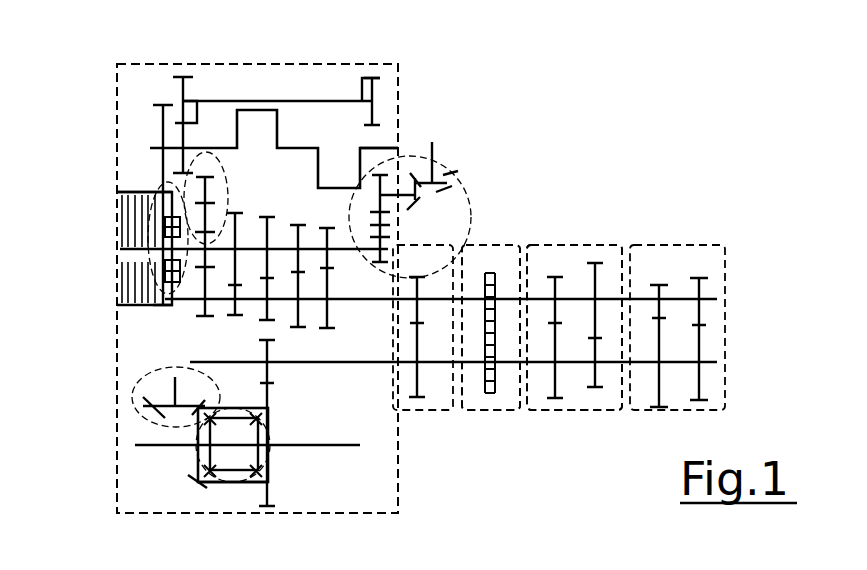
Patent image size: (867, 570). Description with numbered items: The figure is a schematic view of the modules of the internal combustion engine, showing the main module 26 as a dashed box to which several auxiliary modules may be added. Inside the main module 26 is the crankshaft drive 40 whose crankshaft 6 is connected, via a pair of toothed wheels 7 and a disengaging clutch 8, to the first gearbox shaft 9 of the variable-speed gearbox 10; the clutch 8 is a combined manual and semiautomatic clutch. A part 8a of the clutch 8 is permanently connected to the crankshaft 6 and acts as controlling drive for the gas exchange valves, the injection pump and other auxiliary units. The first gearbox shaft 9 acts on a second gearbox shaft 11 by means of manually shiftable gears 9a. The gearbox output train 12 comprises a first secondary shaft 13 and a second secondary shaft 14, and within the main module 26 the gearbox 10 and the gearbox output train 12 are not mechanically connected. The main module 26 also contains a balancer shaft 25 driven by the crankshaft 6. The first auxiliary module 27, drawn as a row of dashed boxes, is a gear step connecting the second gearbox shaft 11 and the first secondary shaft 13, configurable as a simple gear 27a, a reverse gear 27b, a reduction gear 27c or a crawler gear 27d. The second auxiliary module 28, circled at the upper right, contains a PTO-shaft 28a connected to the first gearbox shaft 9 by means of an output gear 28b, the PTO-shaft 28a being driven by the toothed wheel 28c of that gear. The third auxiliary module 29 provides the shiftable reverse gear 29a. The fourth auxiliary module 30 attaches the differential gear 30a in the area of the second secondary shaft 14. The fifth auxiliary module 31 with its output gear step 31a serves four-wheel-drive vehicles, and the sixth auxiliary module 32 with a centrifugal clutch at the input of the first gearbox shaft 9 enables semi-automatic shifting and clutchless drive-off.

The crankshaft 6 is at (383, 148).
The pair of toothed wheels 7 is at (160, 180).
The disengaging clutch 8 is at (104, 187).
The part of the clutch 8a is at (143, 192).
The first gearbox shaft 9 is at (275, 243).
The manually shiftable gears 9a is at (265, 233).
The variable-speed gearbox 10 is at (291, 296).
The second gearbox shaft 11 is at (338, 302).
The gearbox output train 12 is at (283, 420).
The first secondary shaft 13 is at (342, 364).
The second secondary shaft 14 is at (338, 448).
The balancer shaft 25 is at (323, 98).
The main module 26 is at (400, 496).
The first auxiliary module 27 is at (514, 233).
The simple gear 27a is at (468, 413).
The reverse gear 27b is at (520, 245).
The reduction gear 27c is at (590, 245).
The crawler gear 27d is at (727, 397).
The second auxiliary module 28 is at (482, 180).
The PTO-shaft 28a is at (433, 150).
The output gear 28b is at (426, 209).
The toothed wheel 28c is at (383, 263).
The third auxiliary module 29 is at (243, 155).
The shiftable reverse gear 29a is at (201, 178).
The fourth auxiliary module 30 is at (224, 496).
The differential gear 30a is at (242, 462).
The fifth auxiliary module 31 is at (160, 354).
The output gear step 31a is at (183, 402).
The sixth auxiliary module 32 is at (160, 182).
The crankshaft drive 40 is at (397, 114).